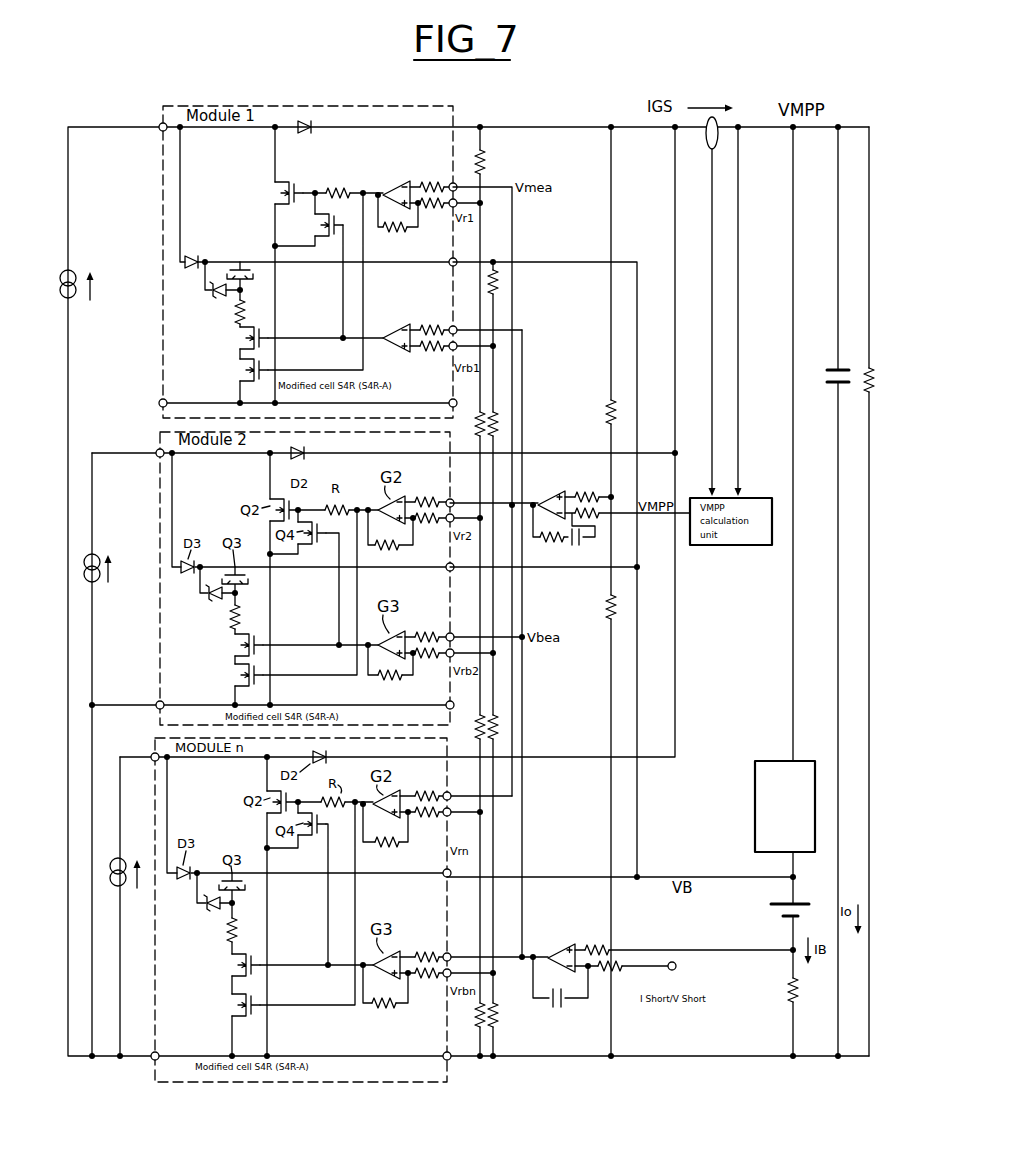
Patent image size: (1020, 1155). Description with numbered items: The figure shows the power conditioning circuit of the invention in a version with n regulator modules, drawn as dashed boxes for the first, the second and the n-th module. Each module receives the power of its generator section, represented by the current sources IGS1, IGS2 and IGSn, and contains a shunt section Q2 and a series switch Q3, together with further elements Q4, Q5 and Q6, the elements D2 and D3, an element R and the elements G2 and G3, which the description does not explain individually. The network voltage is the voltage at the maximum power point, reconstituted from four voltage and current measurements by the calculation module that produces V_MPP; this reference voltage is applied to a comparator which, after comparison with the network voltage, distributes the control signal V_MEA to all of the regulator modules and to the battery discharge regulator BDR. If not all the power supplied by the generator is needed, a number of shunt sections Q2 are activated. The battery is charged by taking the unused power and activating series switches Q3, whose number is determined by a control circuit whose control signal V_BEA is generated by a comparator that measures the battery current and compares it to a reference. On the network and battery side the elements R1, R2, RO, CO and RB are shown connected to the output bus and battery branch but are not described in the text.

The shunt section Q2 is at (273, 188).
The series switch Q3 is at (240, 262).
The transistor Q4 is at (314, 222).
The transistor Q5 is at (240, 336).
The transistor Q6 is at (240, 368).
The diode D2 is at (306, 141).
The diode D3 is at (193, 254).
The resistor R is at (338, 183).
The amplifier G2 is at (395, 184).
The amplifier G3 is at (395, 327).
The resistor R1 is at (603, 416).
The resistor R2 is at (603, 610).
The output resistor RO is at (863, 362).
The output capacitor CO is at (828, 366).
The battery resistor RB is at (807, 990).
The BDR module BDR is at (785, 806).
The current source IGS1 is at (97, 285).
The current source IGS2 is at (111, 584).
The current source IGSn is at (133, 887).